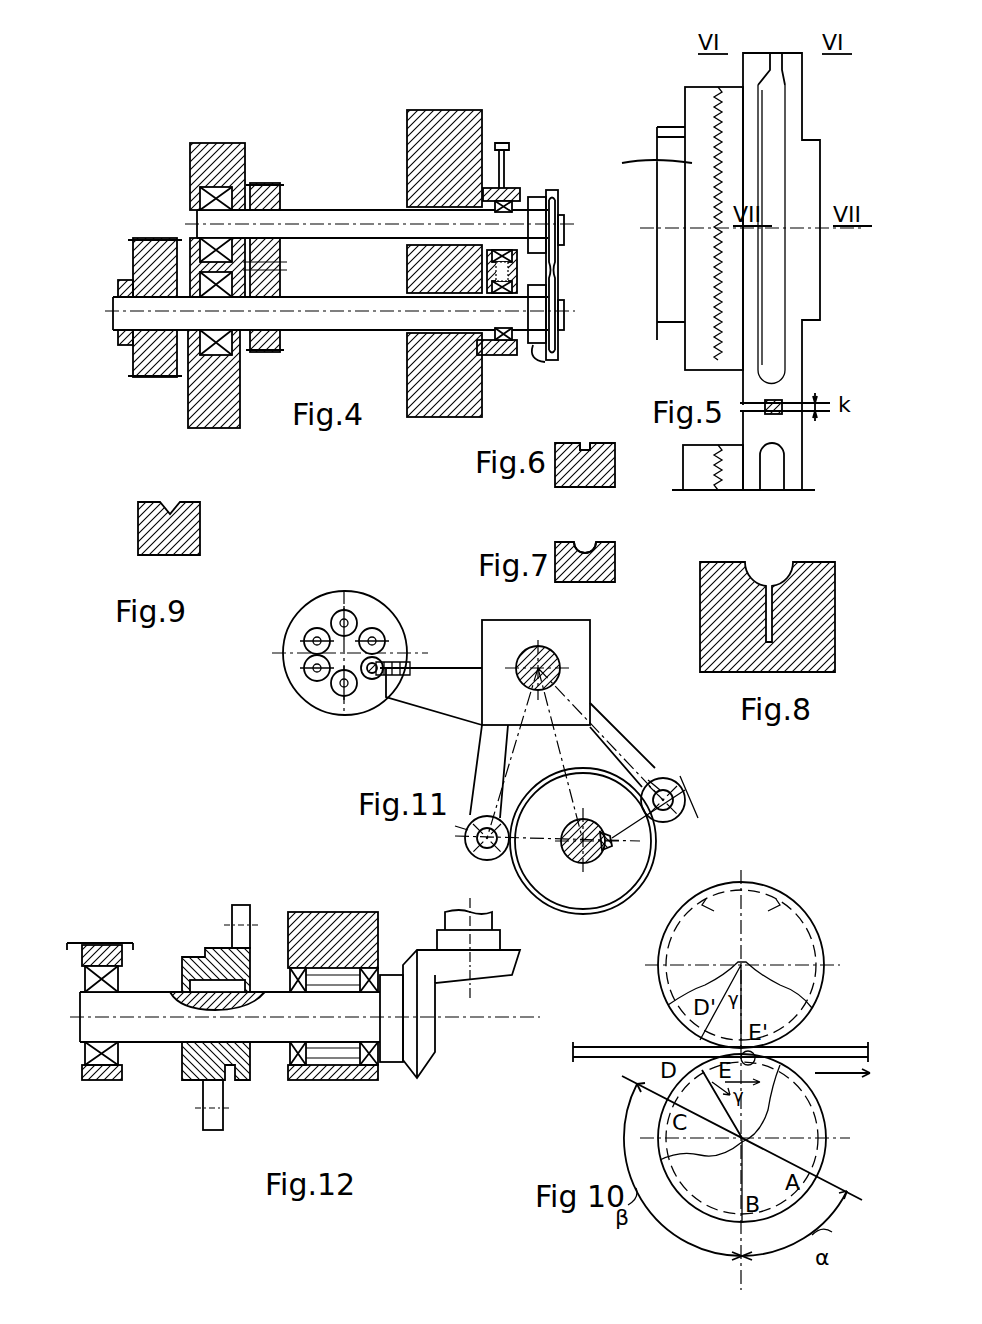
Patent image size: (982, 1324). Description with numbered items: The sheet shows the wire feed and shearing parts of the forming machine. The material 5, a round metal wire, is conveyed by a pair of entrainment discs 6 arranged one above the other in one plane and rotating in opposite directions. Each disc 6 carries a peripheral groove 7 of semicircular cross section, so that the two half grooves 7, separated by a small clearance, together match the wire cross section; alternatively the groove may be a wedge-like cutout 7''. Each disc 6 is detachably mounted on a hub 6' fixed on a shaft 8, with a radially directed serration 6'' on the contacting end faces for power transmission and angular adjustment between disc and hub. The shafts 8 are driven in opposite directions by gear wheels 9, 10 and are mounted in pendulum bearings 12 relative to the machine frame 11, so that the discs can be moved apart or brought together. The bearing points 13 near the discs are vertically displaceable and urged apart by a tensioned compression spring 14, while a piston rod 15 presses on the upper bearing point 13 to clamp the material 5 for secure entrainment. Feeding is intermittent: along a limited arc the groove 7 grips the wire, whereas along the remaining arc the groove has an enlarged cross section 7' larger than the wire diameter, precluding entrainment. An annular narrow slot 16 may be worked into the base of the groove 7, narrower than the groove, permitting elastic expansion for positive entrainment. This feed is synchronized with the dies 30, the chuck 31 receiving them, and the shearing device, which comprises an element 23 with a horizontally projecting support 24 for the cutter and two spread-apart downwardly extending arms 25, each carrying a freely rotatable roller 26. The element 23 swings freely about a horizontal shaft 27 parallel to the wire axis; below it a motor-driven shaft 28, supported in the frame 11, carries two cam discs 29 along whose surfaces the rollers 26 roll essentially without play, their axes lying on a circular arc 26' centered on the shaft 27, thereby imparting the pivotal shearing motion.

In FIG. 5, the material 5 is at (782, 400).
In FIG. 10, the material 5 is at (640, 1050).
In FIG. 4, the disc 6 is at (574, 276).
In FIG. 5, the disc 6 is at (757, 271).
In FIG. 6, the disc 6 is at (602, 465).
In FIG. 7, the disc 6 is at (602, 552).
In FIG. 10, the disc 6 is at (742, 1052).
In FIG. 4, the hub 6' is at (568, 272).
In FIG. 5, the hub 6' is at (713, 467).
In FIG. 5, the serration 6'' is at (682, 228).
In FIG. 5, the groove 7 is at (771, 48).
In FIG. 6, the groove 7 is at (591, 431).
In FIG. 10, the groove 7 is at (735, 1171).
In FIG. 7, the cross section 7' is at (583, 531).
In FIG. 10, the cross section 7' is at (701, 1180).
In FIG. 9, the wedge-like cutout 7'' is at (169, 506).
In FIG. 4, the shaft 8 is at (368, 262).
In FIG. 4, the gear wheel 9 is at (150, 238).
In FIG. 4, the gear wheel 10 is at (294, 268).
In FIG. 4, the machine frame 11 is at (222, 170).
In FIG. 12, the machine frame 11 is at (318, 918).
In FIG. 4, the pendulum bearing 12 is at (200, 197).
In FIG. 4, the bearing point 13 is at (531, 187).
In FIG. 4, the compression spring 14 is at (523, 273).
In FIG. 4, the piston rod 15 is at (512, 158).
In FIG. 8, the slot 16 is at (768, 622).
In FIG. 11, the element 23 is at (574, 713).
In FIG. 11, the support 24 is at (438, 698).
In FIG. 11, the arm 25 is at (484, 762).
In FIG. 11, the roller 26 is at (567, 819).
In FIG. 12, the roller 26 is at (209, 1025).
In FIG. 11, the circular arc 26' is at (636, 841).
In FIG. 11, the shaft 27 is at (560, 665).
In FIG. 11, the shaft 28 is at (602, 862).
In FIG. 12, the shaft 28 is at (150, 1042).
In FIG. 12, the cam disc 29 is at (218, 1086).
In FIG. 11, the die 30 is at (308, 638).
In FIG. 11, the chuck 31 is at (333, 604).